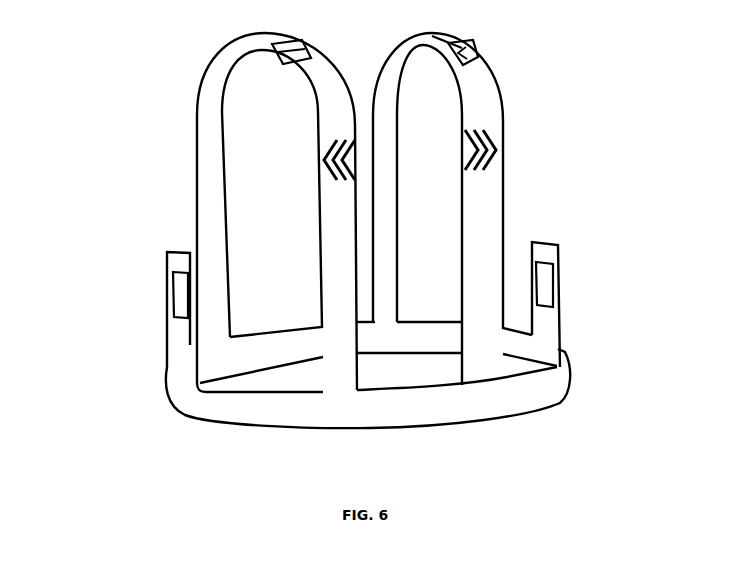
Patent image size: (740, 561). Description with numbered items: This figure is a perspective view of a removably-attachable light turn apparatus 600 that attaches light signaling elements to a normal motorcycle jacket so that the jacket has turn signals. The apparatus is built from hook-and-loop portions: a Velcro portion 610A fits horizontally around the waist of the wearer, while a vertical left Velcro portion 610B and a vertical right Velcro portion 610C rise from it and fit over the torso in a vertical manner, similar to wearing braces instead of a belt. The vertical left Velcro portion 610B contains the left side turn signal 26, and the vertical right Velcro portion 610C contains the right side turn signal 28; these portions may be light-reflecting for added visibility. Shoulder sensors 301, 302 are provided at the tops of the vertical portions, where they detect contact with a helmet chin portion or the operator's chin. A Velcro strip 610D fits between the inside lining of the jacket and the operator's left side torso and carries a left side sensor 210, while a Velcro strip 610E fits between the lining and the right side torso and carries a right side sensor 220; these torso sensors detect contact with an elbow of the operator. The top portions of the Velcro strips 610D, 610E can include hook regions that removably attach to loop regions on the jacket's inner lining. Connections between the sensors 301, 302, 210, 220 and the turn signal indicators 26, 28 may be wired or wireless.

The removably-attachable light turn apparatus 600 is at (152, 57).
The Velcro portion 610A is at (455, 405).
The vertical left Velcro portion 610B is at (209, 209).
The vertical right Velcro portion 610C is at (494, 209).
The Velcro strip 610D is at (107, 312).
The Velcro strip 610E is at (592, 284).
The left side turn signal 26 is at (323, 163).
The right side turn signal 28 is at (498, 143).
The shoulder sensor 301 is at (305, 58).
The shoulder sensor 302 is at (470, 52).
The torso sensor 210 is at (540, 285).
The torso sensor 220 is at (176, 310).